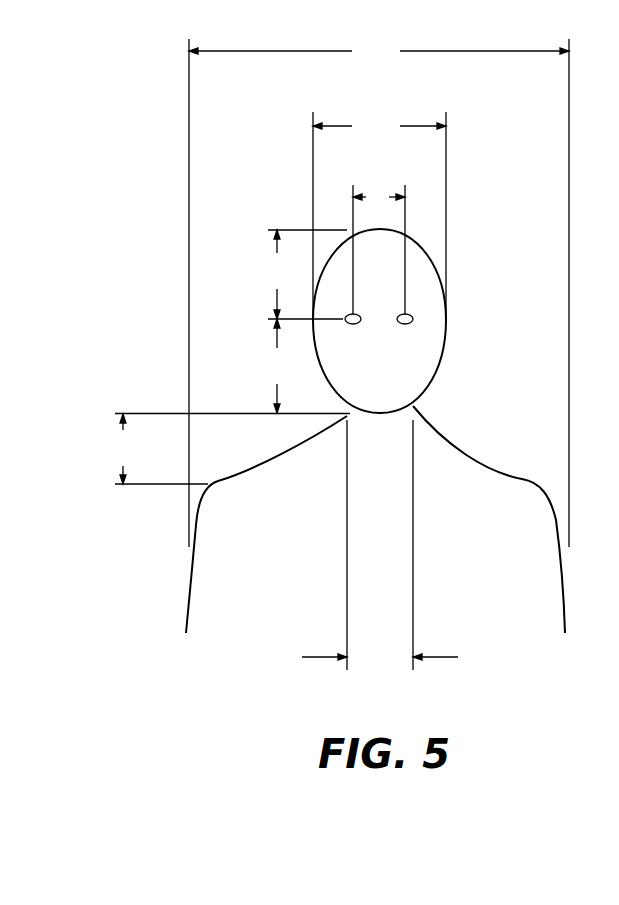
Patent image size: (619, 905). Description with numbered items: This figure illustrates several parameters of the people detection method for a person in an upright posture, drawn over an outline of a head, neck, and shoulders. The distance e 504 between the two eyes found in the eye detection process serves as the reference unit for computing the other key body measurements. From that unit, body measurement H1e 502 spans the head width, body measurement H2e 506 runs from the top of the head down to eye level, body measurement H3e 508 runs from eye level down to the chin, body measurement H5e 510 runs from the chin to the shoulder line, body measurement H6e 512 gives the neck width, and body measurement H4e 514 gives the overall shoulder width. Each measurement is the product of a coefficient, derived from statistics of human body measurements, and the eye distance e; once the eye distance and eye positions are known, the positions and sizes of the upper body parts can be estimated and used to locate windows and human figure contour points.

The body measurement H1e 502 is at (359, 105).
The distance e 504 is at (393, 170).
The body measurement H2e 506 is at (256, 264).
The body measurement H3e 508 is at (256, 370).
The body measurement H5e 510 is at (100, 446).
The body measurement H6e 512 is at (379, 682).
The body measurement H4e 514 is at (354, 34).